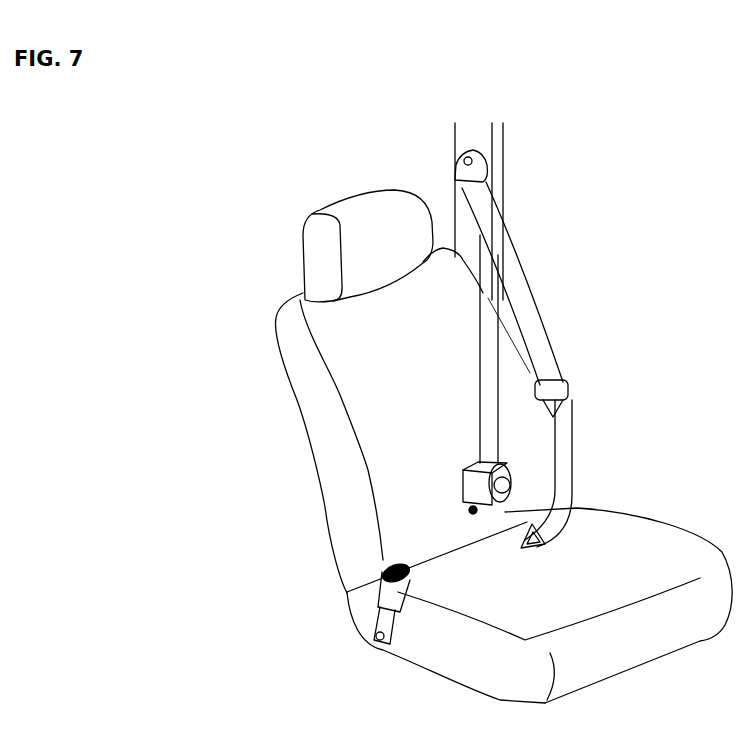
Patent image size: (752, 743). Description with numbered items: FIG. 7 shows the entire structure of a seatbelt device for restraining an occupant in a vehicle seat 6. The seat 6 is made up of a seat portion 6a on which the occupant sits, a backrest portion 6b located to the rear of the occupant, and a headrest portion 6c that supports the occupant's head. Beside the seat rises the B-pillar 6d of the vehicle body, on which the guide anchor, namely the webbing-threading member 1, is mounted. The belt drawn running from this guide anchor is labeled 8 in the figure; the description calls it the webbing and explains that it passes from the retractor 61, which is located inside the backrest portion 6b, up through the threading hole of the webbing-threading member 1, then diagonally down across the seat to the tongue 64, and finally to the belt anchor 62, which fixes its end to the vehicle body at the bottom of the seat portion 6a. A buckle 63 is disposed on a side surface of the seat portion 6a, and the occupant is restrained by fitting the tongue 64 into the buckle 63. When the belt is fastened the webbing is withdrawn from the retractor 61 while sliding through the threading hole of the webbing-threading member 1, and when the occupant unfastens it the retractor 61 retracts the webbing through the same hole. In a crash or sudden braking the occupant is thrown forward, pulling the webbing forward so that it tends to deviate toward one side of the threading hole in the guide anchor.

The webbing-threading member 1 is at (455, 162).
The seat 6 is at (257, 283).
The seat portion 6a is at (625, 550).
The backrest portion 6b is at (380, 420).
The headrest portion 6c is at (363, 215).
The B-pillar 6d is at (498, 173).
The webbing (seat belt) 8 is at (545, 293).
The retractor 61 is at (465, 487).
The belt anchor 62 is at (537, 547).
The buckle 63 is at (375, 605).
The tongue 64 is at (570, 403).